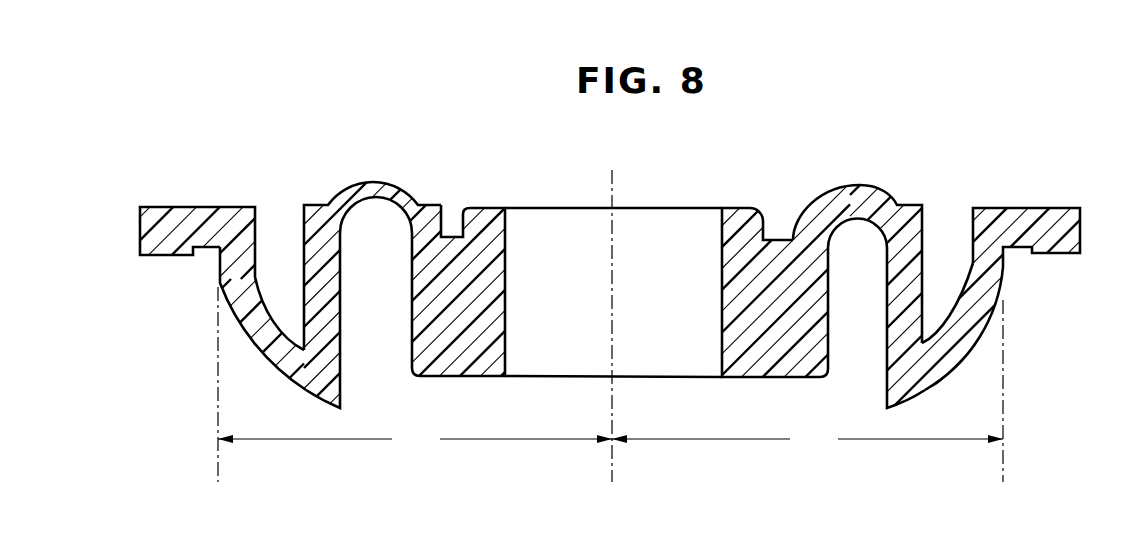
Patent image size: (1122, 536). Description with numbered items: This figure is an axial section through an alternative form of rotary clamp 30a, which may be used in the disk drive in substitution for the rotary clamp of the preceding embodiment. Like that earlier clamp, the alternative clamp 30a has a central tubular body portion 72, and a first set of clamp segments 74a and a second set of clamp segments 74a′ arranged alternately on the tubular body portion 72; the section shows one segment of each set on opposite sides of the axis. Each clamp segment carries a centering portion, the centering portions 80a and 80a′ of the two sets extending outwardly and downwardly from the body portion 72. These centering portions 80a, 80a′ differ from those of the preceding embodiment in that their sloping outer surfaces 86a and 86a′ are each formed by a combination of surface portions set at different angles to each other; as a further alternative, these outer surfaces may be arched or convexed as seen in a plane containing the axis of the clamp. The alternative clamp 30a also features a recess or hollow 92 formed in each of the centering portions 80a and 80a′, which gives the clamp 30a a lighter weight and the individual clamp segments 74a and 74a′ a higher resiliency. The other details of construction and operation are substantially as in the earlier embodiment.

The rotary clamp 30a is at (760, 173).
The tubular body portion 72 is at (492, 208).
The clamp segments of the first set 74a is at (232, 207).
The clamp segments of the second set 74a′ is at (1027, 155).
The centering portion 80a is at (242, 334).
The centering portion 80a′ is at (1068, 318).
The sloping outer surface 86a is at (287, 383).
The sloping outer surface 86a′ is at (985, 373).
The recess or hollow 92 is at (303, 230).